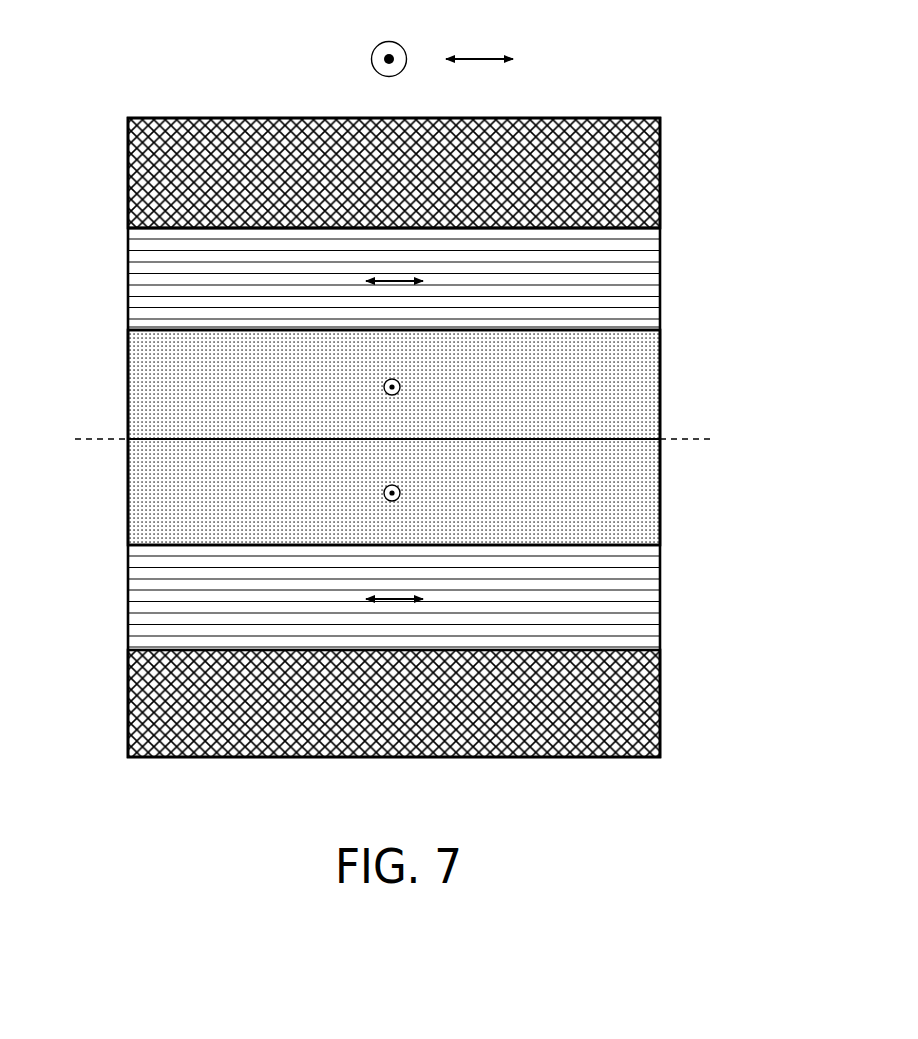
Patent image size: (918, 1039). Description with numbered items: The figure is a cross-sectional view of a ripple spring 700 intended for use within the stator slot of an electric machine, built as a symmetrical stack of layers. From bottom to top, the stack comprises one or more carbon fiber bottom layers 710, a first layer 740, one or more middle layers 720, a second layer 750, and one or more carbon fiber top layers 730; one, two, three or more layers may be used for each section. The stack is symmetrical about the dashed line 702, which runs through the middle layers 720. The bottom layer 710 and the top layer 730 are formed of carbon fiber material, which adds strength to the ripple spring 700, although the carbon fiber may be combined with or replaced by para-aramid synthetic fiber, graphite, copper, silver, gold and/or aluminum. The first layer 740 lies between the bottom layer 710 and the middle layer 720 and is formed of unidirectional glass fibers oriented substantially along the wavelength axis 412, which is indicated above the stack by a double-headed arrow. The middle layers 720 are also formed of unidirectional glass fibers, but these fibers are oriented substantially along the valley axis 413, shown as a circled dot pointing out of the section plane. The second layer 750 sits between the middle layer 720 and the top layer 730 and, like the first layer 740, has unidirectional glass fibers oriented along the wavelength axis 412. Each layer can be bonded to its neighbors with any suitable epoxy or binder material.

The ripple spring 700 is at (630, 44).
The carbon fiber top layer 730 is at (660, 186).
The second layer 750 is at (128, 274).
The middle layer 720 is at (660, 400).
The dashed line 702 is at (85, 437).
The first layer 740 is at (128, 597).
The carbon fiber bottom layer 710 is at (660, 718).
The valley axis 413 is at (371, 59).
The wavelength axis 412 is at (484, 58).